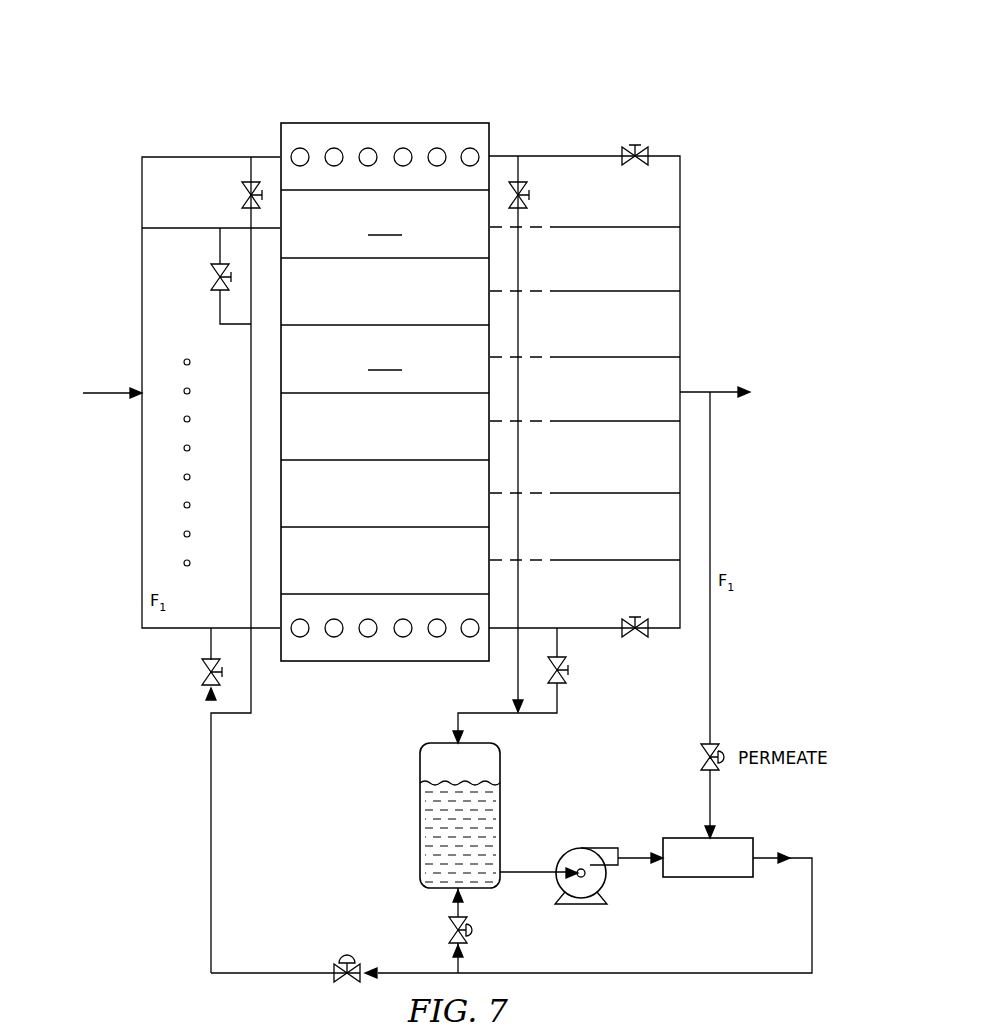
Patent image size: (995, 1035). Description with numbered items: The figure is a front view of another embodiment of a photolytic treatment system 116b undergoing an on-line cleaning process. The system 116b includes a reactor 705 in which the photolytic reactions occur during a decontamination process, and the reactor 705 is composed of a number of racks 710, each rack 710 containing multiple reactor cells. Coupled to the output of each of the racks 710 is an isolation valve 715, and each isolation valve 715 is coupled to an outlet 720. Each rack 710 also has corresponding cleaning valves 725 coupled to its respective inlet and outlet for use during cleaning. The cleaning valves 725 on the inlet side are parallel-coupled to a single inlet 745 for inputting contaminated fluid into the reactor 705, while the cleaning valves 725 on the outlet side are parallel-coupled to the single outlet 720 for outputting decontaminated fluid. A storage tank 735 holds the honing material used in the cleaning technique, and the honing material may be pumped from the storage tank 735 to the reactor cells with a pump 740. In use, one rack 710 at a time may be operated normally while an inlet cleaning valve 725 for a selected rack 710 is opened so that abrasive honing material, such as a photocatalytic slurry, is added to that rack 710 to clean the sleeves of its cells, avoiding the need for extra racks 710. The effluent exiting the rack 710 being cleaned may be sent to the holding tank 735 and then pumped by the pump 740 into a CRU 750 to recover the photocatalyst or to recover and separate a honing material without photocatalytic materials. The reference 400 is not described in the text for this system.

The photolytic treatment system 116b is at (582, 40).
The reactor flow openings 400 is at (471, 146).
The reactor 705 is at (388, 394).
The rack 710 is at (385, 290).
The isolation valve 715 is at (637, 168).
The outlet 720 is at (721, 390).
The cleaning valve 725 is at (241, 192).
The storage tank 735 is at (419, 826).
The pump 740 is at (591, 906).
The inlet 745 is at (103, 388).
The CRU 750 is at (728, 879).